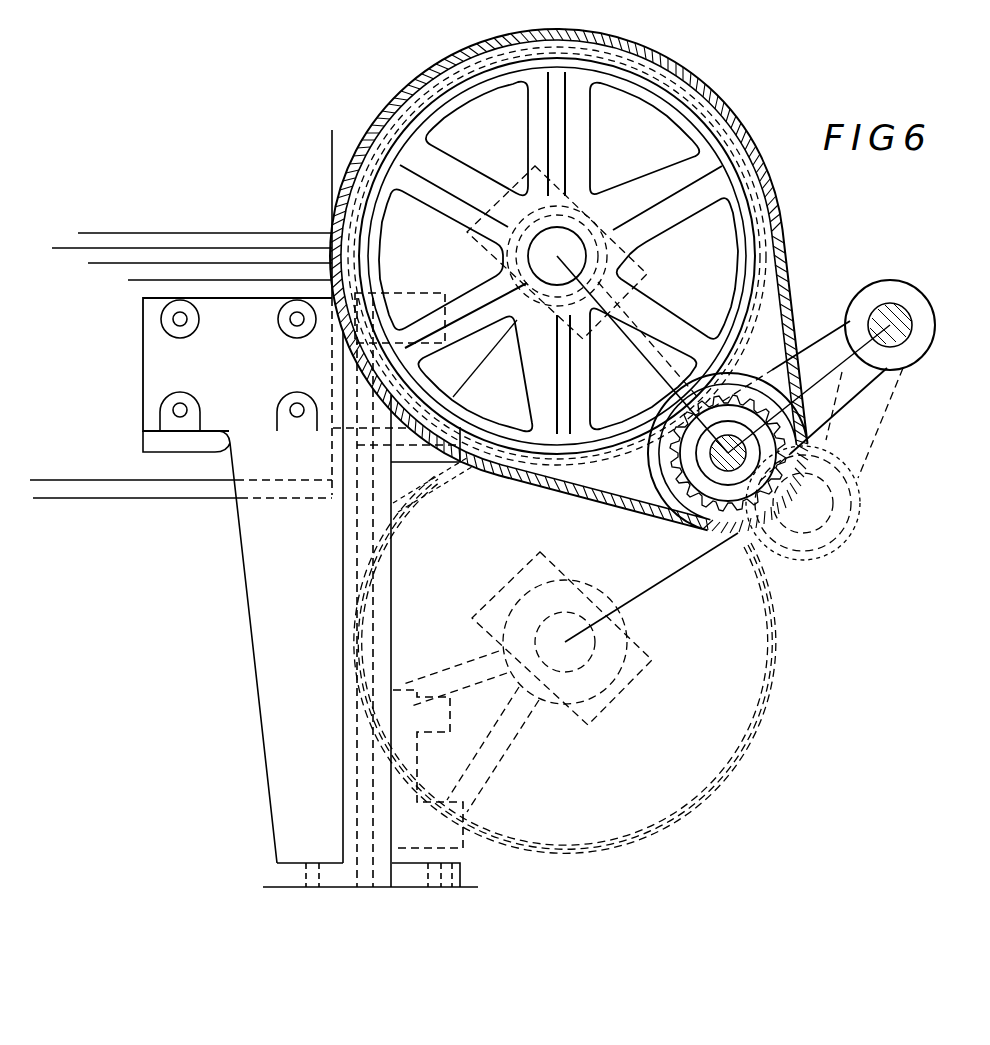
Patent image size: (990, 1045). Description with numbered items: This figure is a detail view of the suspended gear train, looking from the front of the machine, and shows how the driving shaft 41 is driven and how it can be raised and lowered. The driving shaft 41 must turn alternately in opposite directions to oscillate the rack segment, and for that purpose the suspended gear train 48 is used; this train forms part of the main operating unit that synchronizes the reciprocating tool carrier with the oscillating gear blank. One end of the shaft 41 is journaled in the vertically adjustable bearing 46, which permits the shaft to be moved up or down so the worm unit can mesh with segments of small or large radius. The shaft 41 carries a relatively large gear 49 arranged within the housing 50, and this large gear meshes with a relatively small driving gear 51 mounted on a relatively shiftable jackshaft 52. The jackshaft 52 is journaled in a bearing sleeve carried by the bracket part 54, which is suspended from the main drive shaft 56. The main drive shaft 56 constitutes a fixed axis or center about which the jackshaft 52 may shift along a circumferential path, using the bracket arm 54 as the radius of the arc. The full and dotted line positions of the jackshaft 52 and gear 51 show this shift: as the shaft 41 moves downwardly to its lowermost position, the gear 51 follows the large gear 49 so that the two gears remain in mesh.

The driving shaft 41 is at (580, 278).
The vertically adjustable bearing 46 is at (400, 435).
The suspended gear train 48 is at (605, 455).
The large gear 49 is at (742, 302).
The housing 50 is at (787, 312).
The driving gear 51 is at (607, 388).
The jackshaft 52 is at (672, 469).
The bracket part 54 is at (800, 388).
The main drive shaft 56 is at (887, 318).